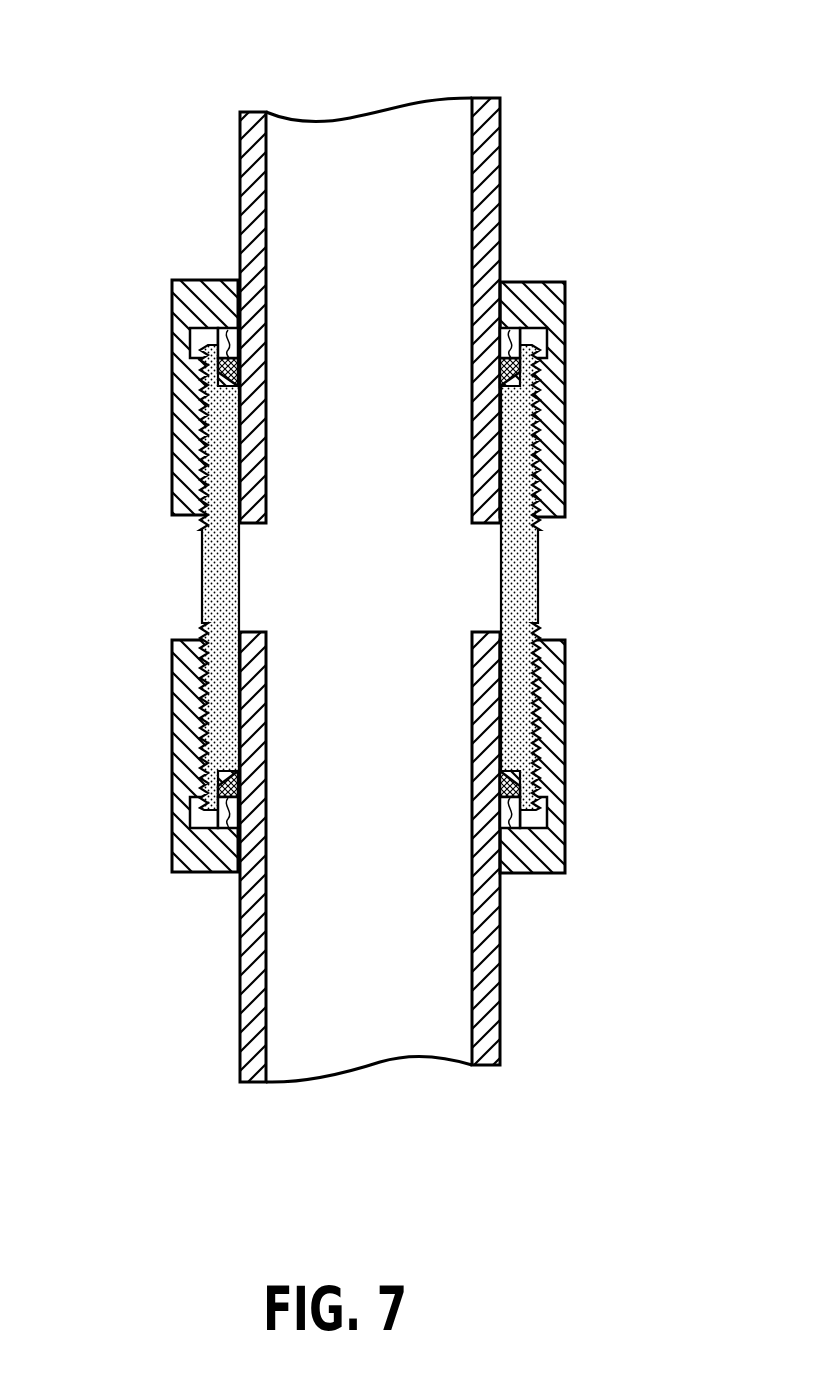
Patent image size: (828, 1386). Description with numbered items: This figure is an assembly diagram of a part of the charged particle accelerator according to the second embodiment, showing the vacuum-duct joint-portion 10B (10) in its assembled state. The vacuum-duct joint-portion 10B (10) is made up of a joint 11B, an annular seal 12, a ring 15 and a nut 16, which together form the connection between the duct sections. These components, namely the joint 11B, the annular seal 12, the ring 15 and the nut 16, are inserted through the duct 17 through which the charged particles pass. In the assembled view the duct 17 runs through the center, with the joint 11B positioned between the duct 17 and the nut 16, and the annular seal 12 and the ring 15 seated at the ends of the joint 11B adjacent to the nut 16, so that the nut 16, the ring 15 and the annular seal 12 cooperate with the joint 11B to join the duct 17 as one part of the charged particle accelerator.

The vacuum-duct joint-portion 10B is at (166, 122).
The vacuum-duct joint-portion 10 is at (371, 590).
The joint 11B is at (200, 580).
The annular seal 12 is at (507, 379).
The ring 15 is at (506, 348).
The nut 16 is at (566, 389).
The duct 17 is at (500, 234).